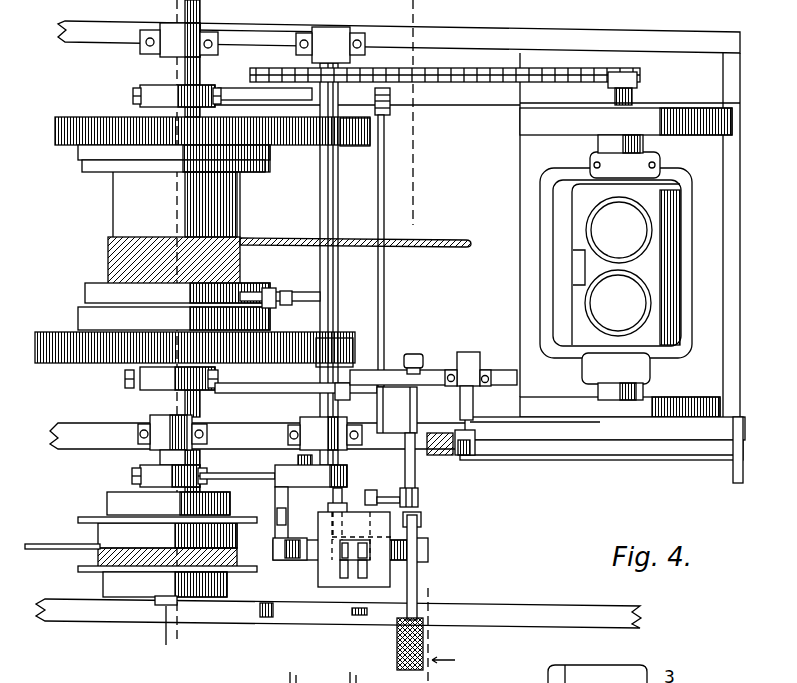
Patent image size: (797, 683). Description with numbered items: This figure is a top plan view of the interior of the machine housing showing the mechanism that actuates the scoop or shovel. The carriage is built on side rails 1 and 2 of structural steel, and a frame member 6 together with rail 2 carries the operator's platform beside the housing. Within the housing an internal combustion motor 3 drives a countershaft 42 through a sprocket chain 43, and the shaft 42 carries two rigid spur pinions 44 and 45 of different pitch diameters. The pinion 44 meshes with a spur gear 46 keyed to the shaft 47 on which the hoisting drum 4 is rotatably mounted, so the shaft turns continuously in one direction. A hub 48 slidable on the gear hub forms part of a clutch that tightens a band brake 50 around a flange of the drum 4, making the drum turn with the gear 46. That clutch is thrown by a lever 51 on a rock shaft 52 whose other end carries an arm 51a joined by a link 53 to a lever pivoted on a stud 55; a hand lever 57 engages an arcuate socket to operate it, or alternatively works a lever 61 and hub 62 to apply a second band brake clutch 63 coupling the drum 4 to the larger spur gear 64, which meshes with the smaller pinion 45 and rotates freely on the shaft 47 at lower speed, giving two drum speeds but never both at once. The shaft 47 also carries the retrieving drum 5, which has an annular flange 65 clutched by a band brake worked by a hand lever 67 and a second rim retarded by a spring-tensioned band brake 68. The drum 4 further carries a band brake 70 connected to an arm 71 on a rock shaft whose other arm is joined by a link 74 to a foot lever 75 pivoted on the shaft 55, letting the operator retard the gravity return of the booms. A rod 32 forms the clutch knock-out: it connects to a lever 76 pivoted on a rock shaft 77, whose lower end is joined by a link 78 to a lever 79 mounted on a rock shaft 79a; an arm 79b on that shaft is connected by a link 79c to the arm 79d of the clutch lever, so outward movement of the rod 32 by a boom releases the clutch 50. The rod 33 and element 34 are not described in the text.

The side rail 1 is at (538, 442).
The side rail 2 is at (452, 37).
The internal combustion motor 3 is at (658, 299).
The hoisting drum 4 is at (128, 198).
The retrieving drum 5 is at (180, 23).
The frame member 6 is at (563, 613).
The clutch knock-out rod 32 is at (733, 472).
The rod 33 is at (453, 243).
The cable 34 is at (55, 534).
The countershaft 42 is at (328, 208).
The sprocket chain 43 is at (450, 74).
The spur pinion 44 is at (372, 138).
The spur pinion 45 is at (342, 343).
The spur gear 46 is at (82, 117).
The shaft 47 is at (163, 610).
The clutch hub 48 is at (145, 108).
The band brake 50 is at (80, 153).
The lever 51 is at (133, 92).
The arm 51a is at (391, 101).
The rock shaft 52 is at (236, 84).
The link 53 is at (385, 193).
The stud 55 is at (429, 548).
The hand lever 57 is at (377, 555).
The lever 61 is at (123, 372).
The clutch hub 62 is at (148, 387).
The band brake clutch 63 is at (88, 322).
The spur gear 64 is at (80, 352).
The annular flange 65 is at (113, 502).
The hand lever 67 is at (303, 554).
The band brake 68 is at (112, 583).
The band brake 70 is at (88, 292).
The arm 71 is at (306, 292).
The link 74 is at (422, 522).
The foot lever 75 is at (415, 586).
The lever 76 is at (483, 428).
The rock shaft 77 is at (468, 403).
The link 78 is at (439, 365).
The lever 79 is at (428, 353).
The rock shaft 79a is at (417, 410).
The arm 79b is at (395, 493).
The link 79c is at (377, 503).
The arm 79d is at (420, 510).